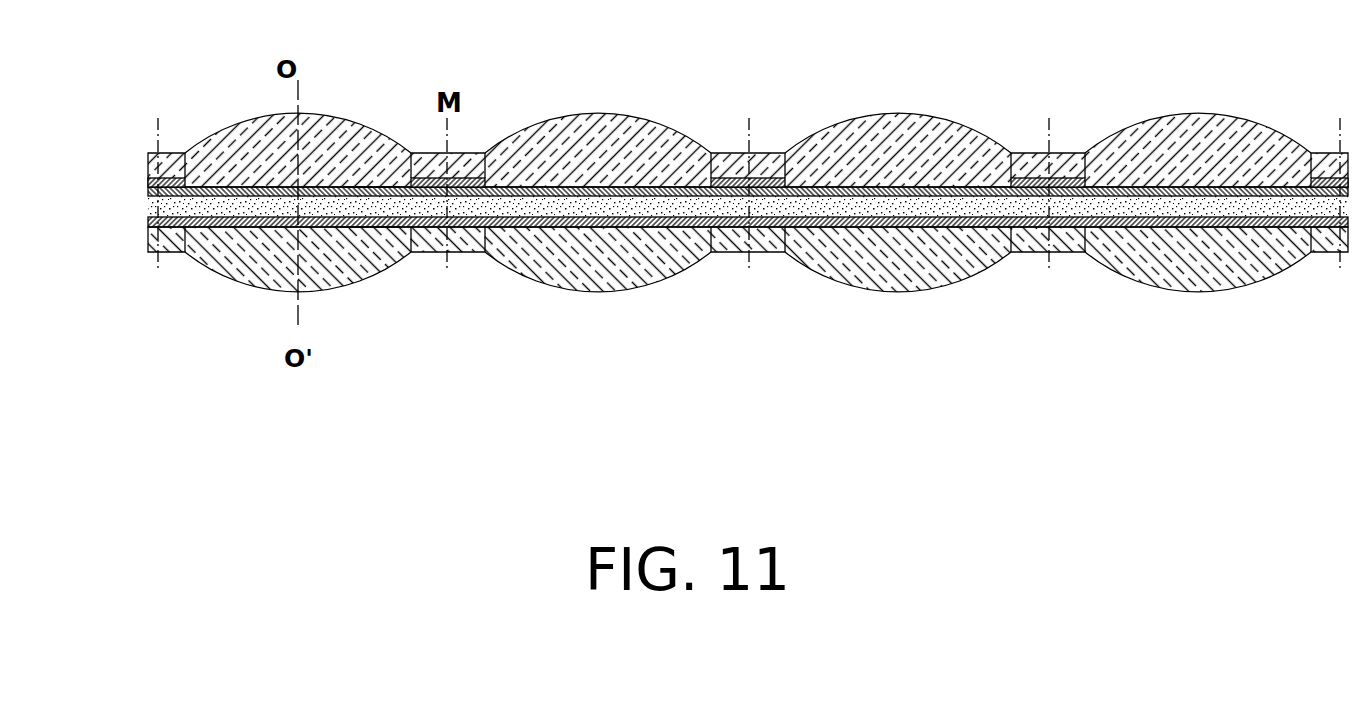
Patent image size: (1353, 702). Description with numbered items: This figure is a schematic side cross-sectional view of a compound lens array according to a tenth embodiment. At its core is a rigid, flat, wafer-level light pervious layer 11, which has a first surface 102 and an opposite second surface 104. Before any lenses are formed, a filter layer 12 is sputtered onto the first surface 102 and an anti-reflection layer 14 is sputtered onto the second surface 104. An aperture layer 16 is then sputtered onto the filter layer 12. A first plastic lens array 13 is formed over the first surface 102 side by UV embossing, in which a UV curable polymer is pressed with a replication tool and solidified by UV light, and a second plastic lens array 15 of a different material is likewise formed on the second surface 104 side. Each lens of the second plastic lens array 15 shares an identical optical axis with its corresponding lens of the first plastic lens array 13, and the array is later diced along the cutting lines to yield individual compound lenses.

The light pervious layer 11 is at (152, 208).
The filter layer 12 is at (152, 196).
The first plastic lens array 13 is at (176, 166).
The anti-reflection layer 14 is at (153, 229).
The second plastic lens array 15 is at (173, 251).
The aperture layer 16 is at (152, 187).
The first surface 102 is at (364, 190).
The second surface 104 is at (370, 221).